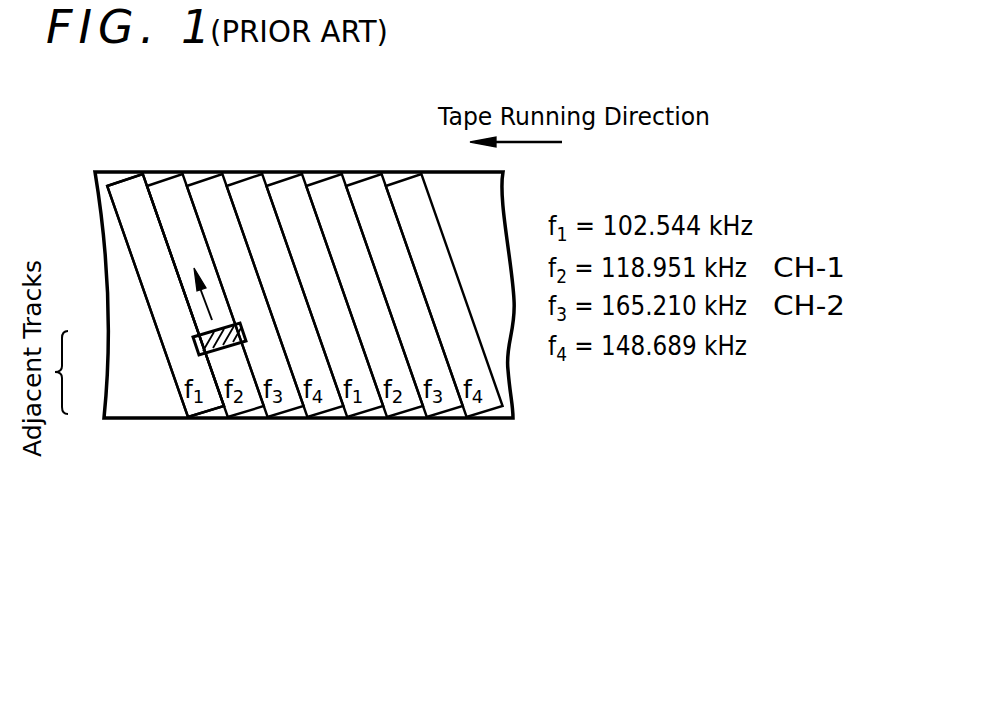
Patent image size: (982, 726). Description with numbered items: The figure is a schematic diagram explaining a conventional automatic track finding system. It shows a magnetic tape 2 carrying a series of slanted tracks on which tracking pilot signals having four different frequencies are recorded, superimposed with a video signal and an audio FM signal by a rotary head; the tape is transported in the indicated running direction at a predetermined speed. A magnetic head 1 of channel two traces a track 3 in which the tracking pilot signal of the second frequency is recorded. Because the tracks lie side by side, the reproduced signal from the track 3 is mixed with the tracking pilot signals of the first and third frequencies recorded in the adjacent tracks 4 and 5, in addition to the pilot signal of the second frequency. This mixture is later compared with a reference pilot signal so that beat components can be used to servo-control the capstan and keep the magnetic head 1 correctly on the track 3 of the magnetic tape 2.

The magnetic head 1 is at (225, 323).
The magnetic tape 2 is at (457, 420).
The track 3 is at (168, 195).
The adjacent track 4 is at (173, 328).
The adjacent track 5 is at (257, 362).